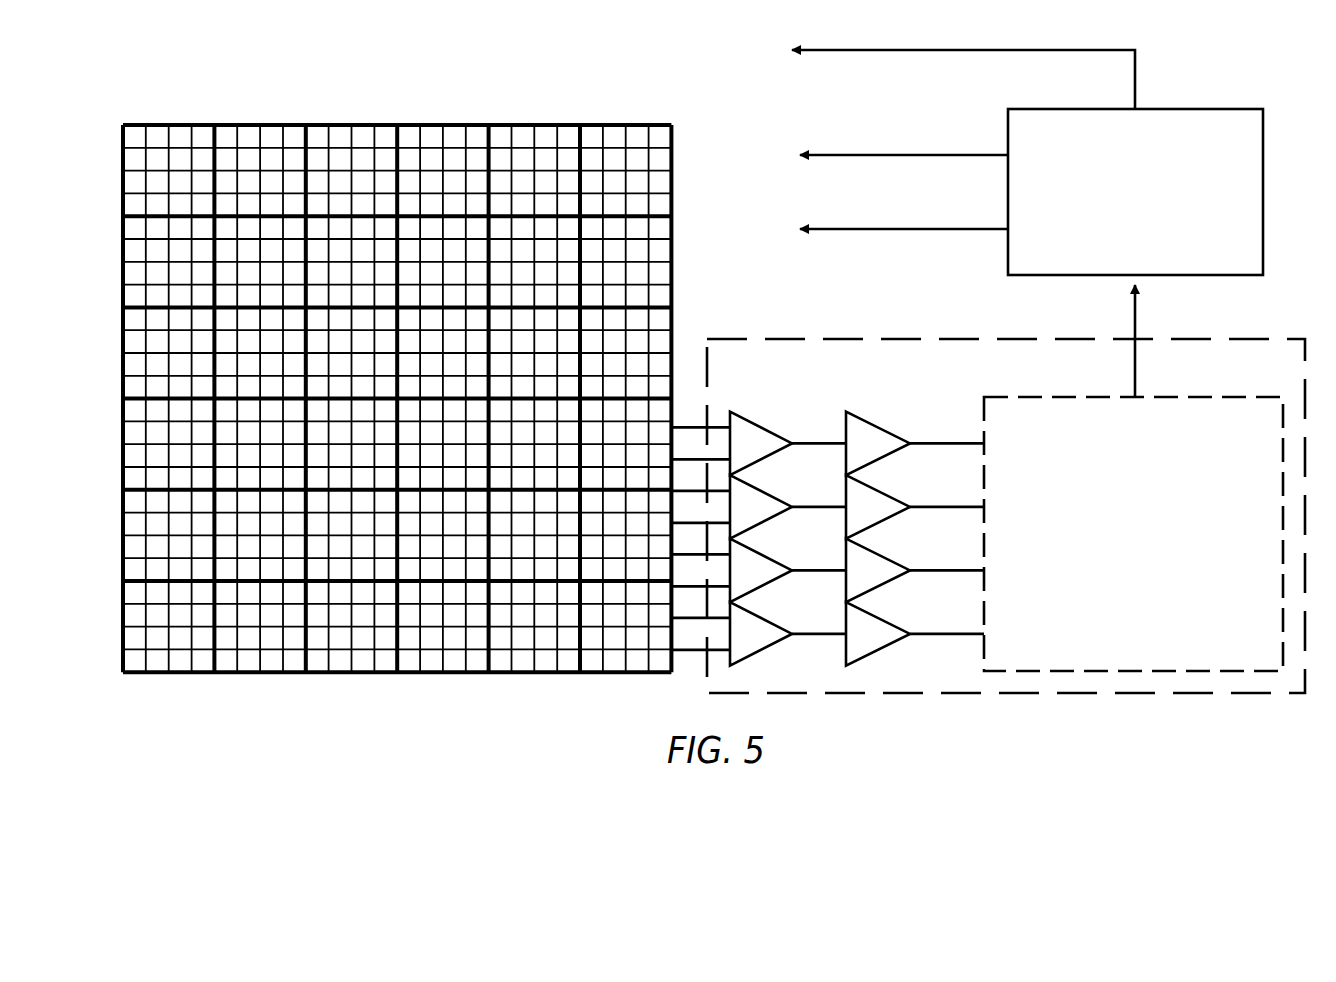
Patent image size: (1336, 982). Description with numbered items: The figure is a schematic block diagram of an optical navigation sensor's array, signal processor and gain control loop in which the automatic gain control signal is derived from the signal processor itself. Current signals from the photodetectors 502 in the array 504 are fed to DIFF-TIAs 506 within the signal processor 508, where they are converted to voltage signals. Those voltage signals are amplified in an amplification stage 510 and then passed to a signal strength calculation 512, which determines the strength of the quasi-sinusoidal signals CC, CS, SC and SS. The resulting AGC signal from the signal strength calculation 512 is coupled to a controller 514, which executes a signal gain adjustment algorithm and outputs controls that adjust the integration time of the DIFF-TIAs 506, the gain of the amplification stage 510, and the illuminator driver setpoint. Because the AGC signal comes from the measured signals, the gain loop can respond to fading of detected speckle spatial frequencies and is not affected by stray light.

The photodetectors (PDs) 502 is at (673, 143).
The array 504 is at (195, 185).
The DIFF-TIAs 506 is at (765, 402).
The signal processor 508 is at (1260, 377).
The amplification stage 510 is at (883, 402).
The signal strength calculation 512 is at (1258, 441).
The controller 514 is at (1232, 162).